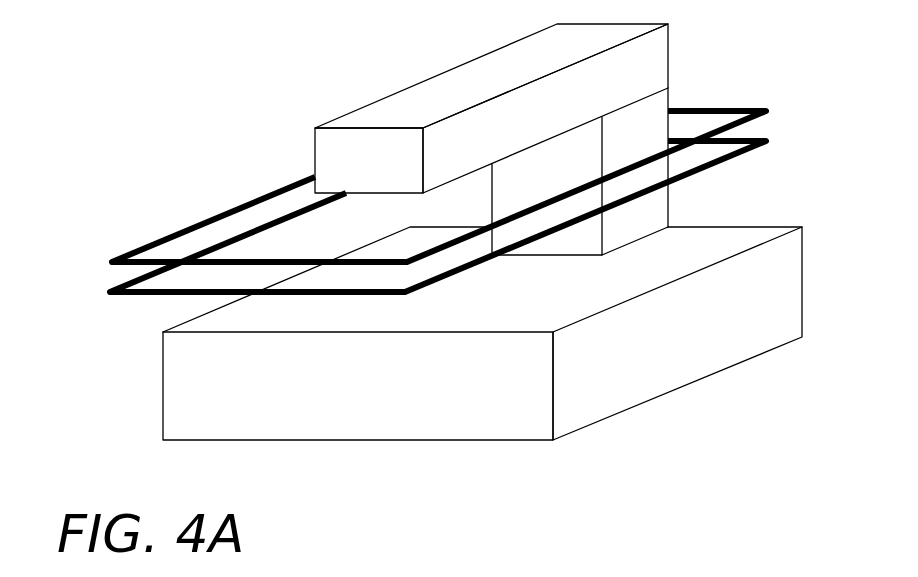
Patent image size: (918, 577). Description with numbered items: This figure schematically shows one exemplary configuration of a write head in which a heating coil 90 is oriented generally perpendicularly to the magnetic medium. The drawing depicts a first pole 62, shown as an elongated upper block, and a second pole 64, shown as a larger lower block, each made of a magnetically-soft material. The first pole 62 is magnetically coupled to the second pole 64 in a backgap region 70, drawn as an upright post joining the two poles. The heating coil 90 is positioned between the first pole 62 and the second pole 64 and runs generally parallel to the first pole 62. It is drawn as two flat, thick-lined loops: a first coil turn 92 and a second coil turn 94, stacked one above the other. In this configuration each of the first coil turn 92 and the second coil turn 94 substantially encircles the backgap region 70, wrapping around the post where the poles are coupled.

The first pole 62 is at (378, 152).
The second pole 64 is at (207, 378).
The backgap region 70 is at (647, 208).
The heating coil 90 is at (128, 208).
The first coil turn 92 is at (232, 212).
The second coil turn 94 is at (130, 287).